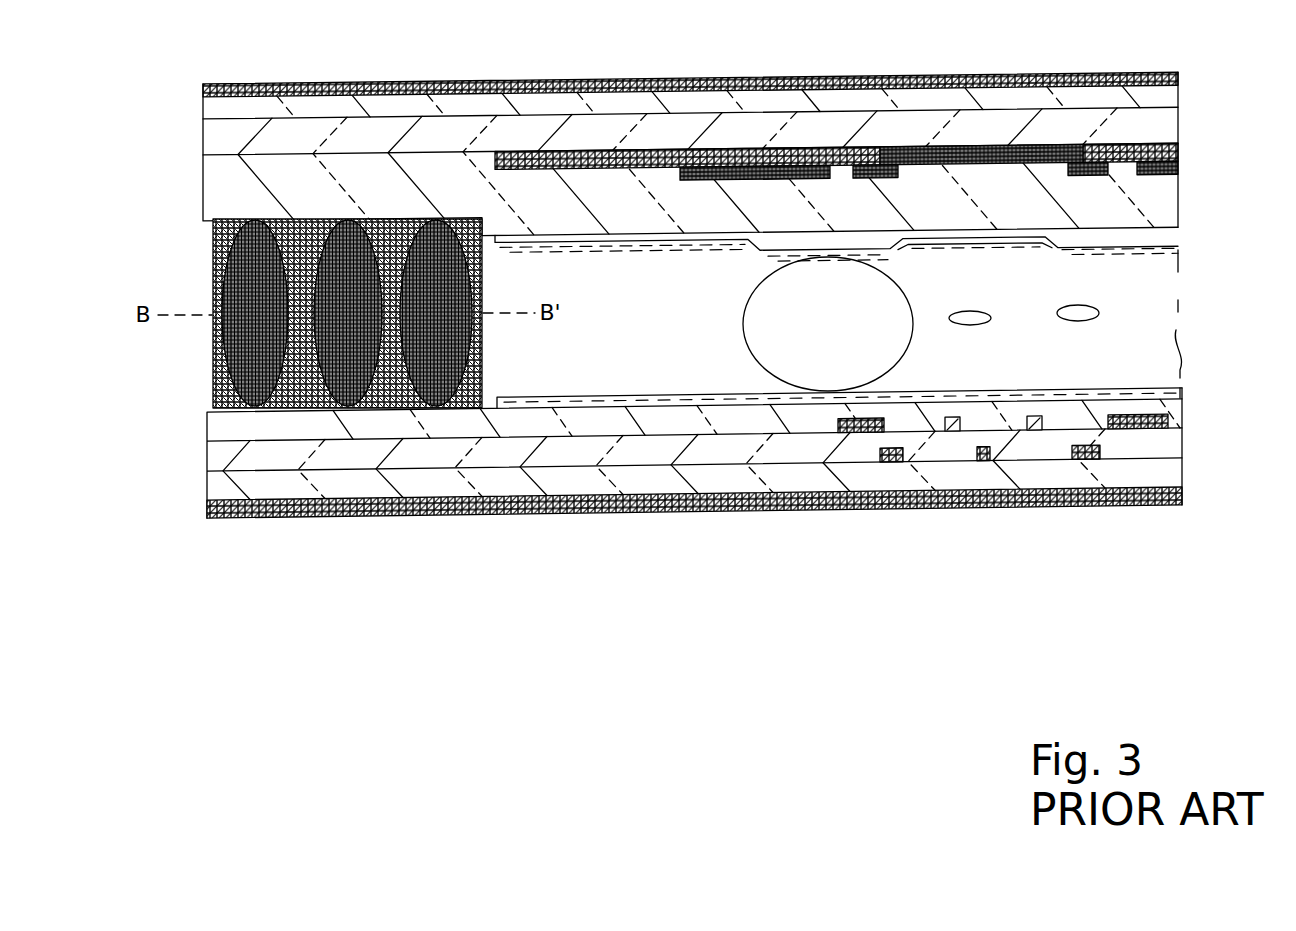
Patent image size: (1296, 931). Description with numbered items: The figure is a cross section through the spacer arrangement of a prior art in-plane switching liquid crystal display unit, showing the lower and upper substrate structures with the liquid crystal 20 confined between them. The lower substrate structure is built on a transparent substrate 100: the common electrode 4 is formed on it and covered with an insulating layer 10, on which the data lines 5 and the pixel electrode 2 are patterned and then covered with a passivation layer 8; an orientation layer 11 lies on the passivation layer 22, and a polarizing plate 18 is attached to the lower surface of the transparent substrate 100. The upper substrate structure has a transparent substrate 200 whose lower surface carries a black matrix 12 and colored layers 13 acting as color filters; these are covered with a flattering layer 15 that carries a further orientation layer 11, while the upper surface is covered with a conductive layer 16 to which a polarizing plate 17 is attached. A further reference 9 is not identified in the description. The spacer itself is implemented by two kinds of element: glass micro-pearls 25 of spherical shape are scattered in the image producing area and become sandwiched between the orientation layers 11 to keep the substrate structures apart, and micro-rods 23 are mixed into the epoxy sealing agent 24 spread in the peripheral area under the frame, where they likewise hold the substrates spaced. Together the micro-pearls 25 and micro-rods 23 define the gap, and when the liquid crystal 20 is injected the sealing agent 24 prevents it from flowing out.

The transparent substrate 200 is at (265, 142).
The transparent substrate 100 is at (555, 483).
The polarizing plate 17 is at (735, 84).
The conductive layer 16 is at (863, 99).
The flattering layer 15 is at (463, 203).
The colored layers 13 is at (977, 158).
The black matrix 12 is at (1135, 140).
The orientation layer 11 is at (707, 392).
The upper substrate assembly 9 is at (1215, 181).
The passivation layer 8 is at (1215, 453).
The micro-pearls 25 is at (788, 368).
The liquid crystal 20 is at (1100, 314).
The pixel electrode 2 is at (1031, 416).
The common electrode 4 is at (1057, 510).
The data lines 5 is at (1078, 460).
The insulating layer 10 is at (1130, 440).
The polarizing plate 18 is at (462, 503).
The passivation layer 22 is at (352, 403).
The micro-rods 23 is at (284, 394).
The sealing agent 24 is at (236, 402).